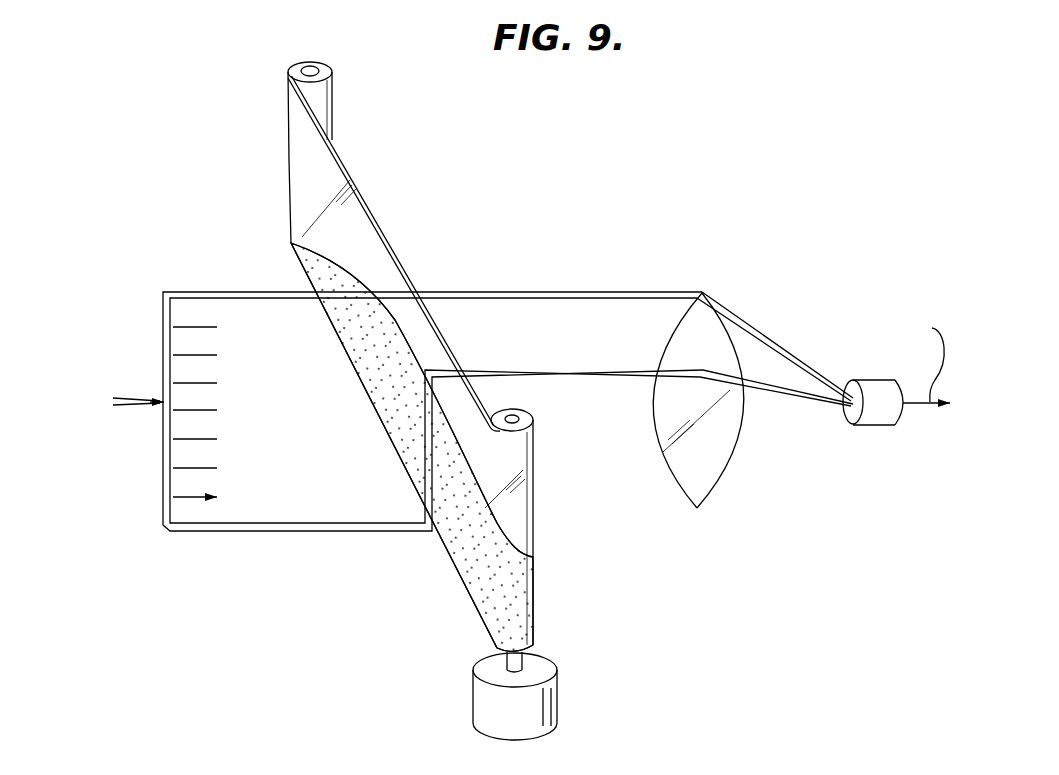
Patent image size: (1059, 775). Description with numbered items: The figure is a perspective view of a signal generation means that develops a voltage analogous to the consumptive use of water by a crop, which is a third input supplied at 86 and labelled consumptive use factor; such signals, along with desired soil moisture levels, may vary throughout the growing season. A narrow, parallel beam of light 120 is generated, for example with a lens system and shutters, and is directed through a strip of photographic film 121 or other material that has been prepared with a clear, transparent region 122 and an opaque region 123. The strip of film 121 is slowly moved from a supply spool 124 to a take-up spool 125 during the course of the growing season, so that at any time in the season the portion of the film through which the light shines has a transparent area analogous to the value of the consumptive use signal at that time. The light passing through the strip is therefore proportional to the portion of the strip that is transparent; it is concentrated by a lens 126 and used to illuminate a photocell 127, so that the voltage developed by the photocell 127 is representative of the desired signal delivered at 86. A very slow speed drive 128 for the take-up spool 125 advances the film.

The consumptive use factor input 86 is at (917, 403).
The beam of light 120 is at (143, 407).
The strip of photographic film 121 is at (292, 193).
The transparent region 122 is at (356, 225).
The opaque region 123 is at (373, 381).
The supply spool 124 is at (323, 103).
The take-up spool 125 is at (535, 477).
The lens 126 is at (713, 473).
The photocell 127 is at (867, 425).
The slow speed drive 128 is at (565, 698).